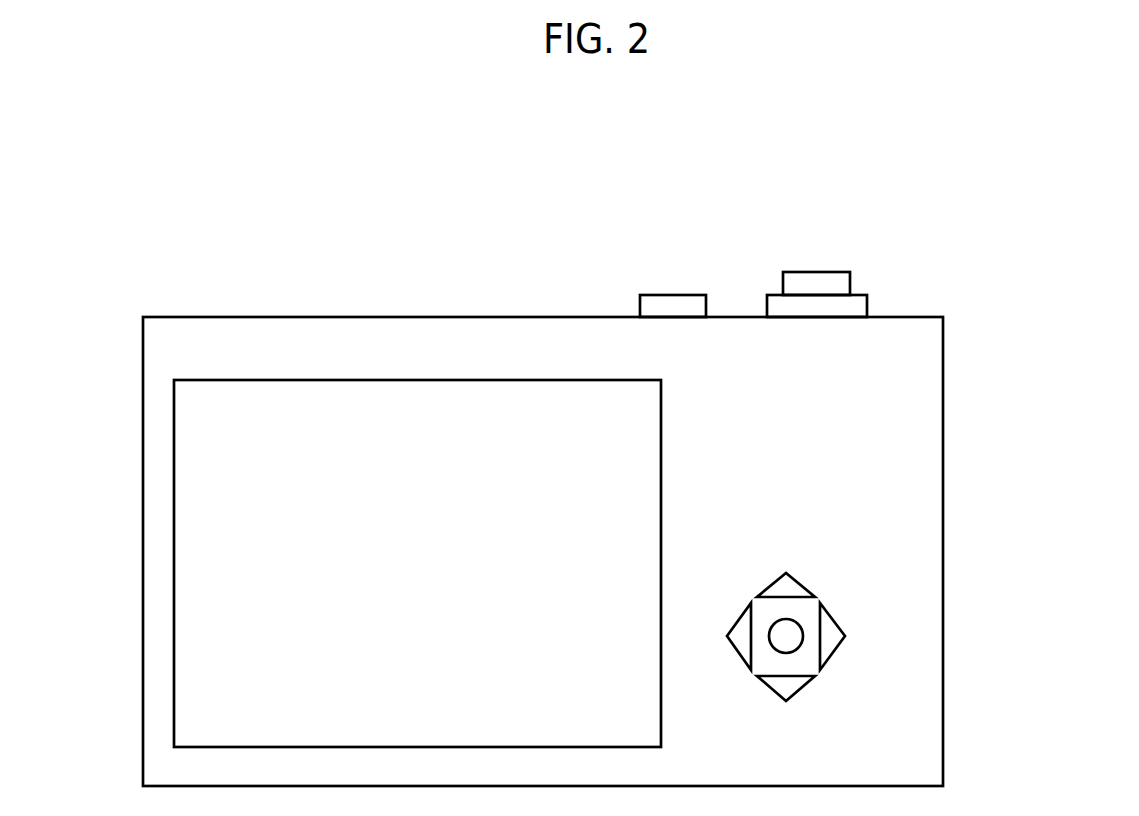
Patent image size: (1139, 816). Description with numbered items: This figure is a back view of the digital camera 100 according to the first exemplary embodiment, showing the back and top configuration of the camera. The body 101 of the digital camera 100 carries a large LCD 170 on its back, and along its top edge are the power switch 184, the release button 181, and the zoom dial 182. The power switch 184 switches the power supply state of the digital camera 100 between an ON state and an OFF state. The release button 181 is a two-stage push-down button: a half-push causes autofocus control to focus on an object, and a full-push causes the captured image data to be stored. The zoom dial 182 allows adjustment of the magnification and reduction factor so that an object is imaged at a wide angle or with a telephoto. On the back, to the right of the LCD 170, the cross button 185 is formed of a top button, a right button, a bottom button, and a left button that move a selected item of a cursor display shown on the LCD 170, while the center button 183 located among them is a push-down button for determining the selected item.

The digital camera 100 is at (289, 197).
The body 101 is at (252, 317).
The LCD 170 is at (425, 380).
The release button 181 is at (812, 272).
The zoom dial 182 is at (863, 295).
The center button 183 is at (795, 617).
The power switch 184 is at (673, 295).
The cross button 185 is at (835, 647).